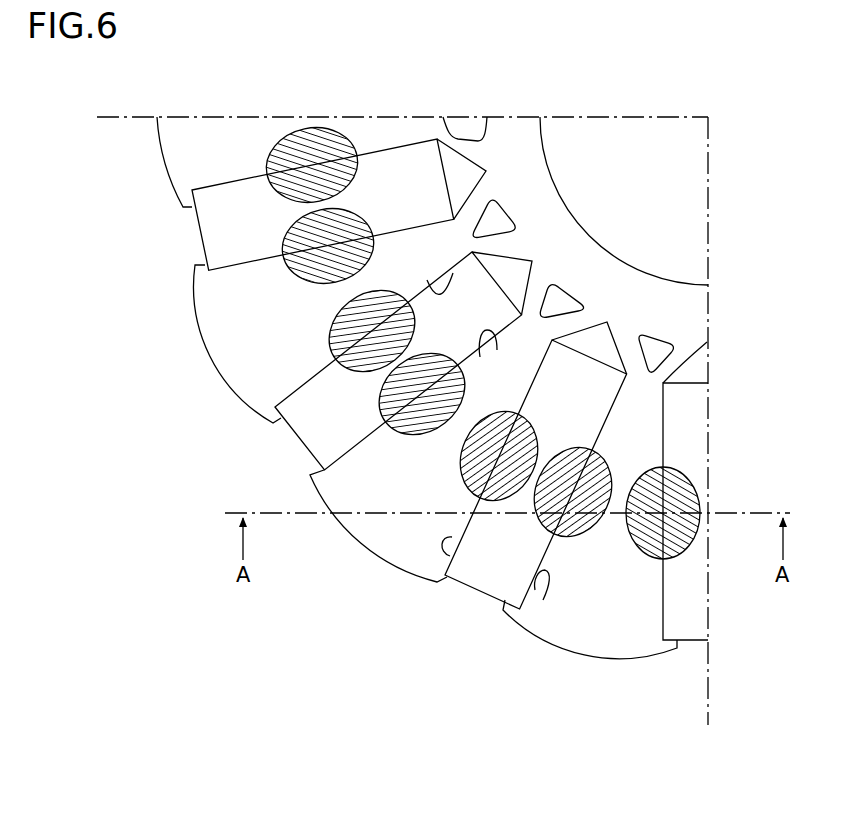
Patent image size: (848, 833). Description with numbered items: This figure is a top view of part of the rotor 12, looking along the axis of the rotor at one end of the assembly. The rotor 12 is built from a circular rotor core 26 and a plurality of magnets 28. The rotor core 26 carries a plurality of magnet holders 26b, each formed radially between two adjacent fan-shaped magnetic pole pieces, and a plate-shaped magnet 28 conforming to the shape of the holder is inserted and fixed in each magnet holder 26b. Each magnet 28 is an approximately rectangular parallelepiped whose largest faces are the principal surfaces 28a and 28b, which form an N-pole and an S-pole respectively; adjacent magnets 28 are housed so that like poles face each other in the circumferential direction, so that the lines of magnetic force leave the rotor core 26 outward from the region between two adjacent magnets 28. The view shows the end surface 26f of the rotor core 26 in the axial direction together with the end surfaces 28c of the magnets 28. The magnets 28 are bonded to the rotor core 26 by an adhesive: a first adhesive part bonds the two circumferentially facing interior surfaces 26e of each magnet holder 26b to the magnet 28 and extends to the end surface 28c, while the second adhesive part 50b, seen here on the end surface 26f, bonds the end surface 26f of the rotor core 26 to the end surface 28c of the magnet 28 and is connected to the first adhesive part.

The rotor 12 is at (502, 774).
The rotor core 26 is at (200, 370).
The magnet holder 26b is at (474, 303).
The interior surface of the magnet holder 26e is at (427, 280).
The end surface of the rotor core 26f is at (627, 470).
The magnet 28 is at (218, 229).
The principal surface 28a is at (543, 600).
The principal surface 28b is at (438, 583).
The end surface of the magnet 28c is at (550, 445).
The second adhesive part 50b is at (412, 435).